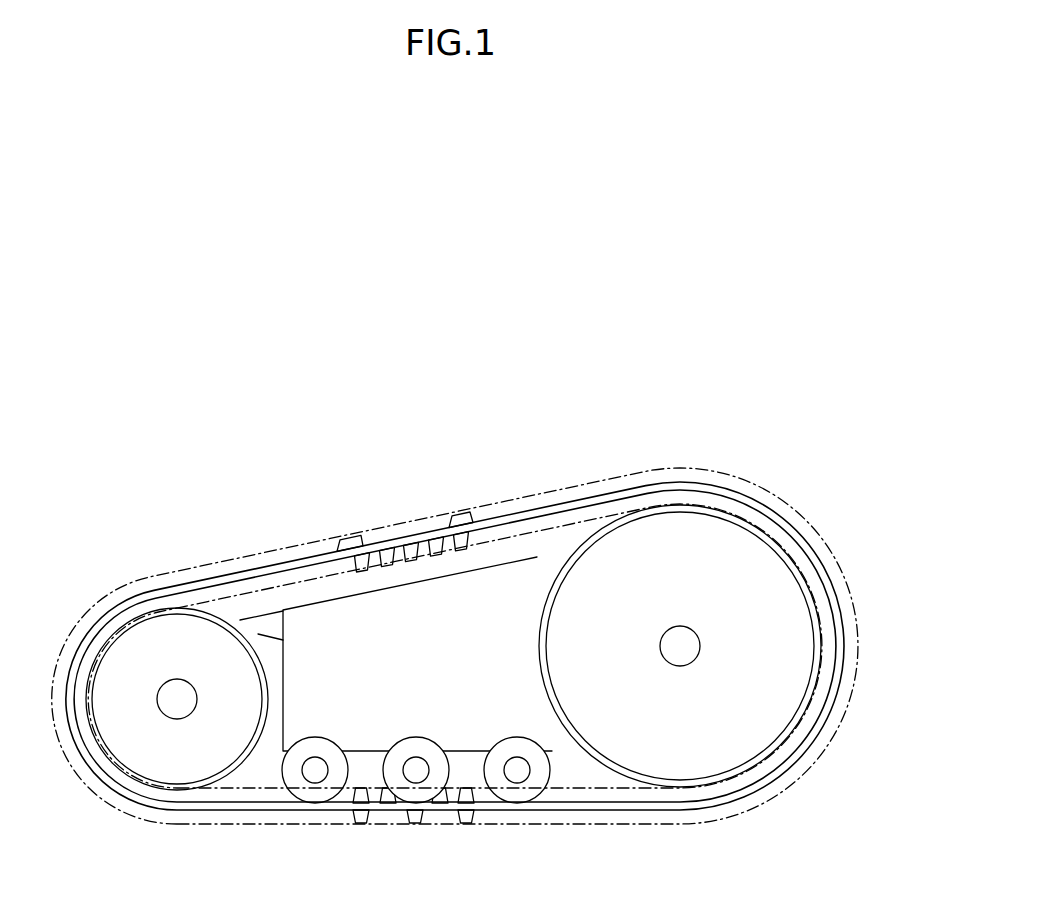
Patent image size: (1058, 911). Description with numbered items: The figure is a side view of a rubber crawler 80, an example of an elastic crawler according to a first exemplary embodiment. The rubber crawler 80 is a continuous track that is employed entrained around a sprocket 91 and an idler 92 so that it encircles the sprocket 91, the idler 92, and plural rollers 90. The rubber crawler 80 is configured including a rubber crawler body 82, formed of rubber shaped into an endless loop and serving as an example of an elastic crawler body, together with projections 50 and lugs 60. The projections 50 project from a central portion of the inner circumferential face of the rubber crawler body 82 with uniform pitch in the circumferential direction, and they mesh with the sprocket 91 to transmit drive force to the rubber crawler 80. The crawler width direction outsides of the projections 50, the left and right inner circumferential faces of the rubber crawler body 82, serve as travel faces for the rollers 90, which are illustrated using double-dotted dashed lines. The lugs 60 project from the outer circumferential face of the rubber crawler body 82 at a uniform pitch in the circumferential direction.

The projections 50 is at (348, 569).
The lugs 60 is at (405, 525).
The rubber crawler 80 is at (698, 350).
The rubber crawler body 82 is at (490, 517).
The rollers 90 is at (315, 793).
The sprocket 91 is at (132, 645).
The idler 92 is at (724, 537).